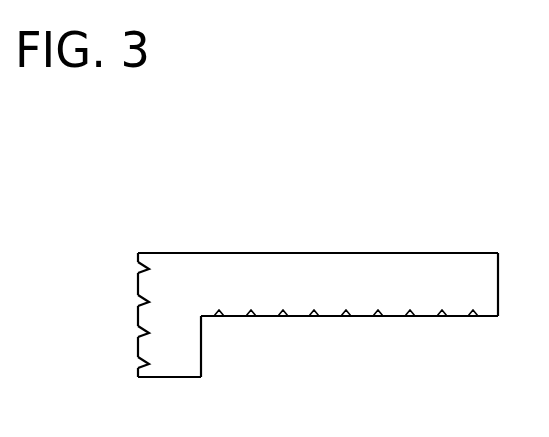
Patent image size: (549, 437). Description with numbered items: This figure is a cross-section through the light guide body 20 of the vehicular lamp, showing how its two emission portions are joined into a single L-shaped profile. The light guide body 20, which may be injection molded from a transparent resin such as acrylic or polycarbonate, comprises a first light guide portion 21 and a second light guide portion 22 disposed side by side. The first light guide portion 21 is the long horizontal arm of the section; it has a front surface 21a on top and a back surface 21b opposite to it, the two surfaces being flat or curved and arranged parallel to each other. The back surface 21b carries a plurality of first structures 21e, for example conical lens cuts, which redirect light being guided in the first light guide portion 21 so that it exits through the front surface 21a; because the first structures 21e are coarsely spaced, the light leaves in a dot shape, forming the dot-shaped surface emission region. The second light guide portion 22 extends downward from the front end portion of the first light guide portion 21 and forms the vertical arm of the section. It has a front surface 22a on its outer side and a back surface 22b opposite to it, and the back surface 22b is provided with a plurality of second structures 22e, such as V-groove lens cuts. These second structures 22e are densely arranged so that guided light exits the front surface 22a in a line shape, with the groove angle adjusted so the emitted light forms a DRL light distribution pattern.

The light guide body 20 is at (269, 188).
The first light guide portion 21 is at (437, 252).
The front surface 21a is at (307, 252).
The back surface 21b is at (378, 318).
The first structures 21e is at (345, 310).
The second light guide portion 22 is at (138, 300).
The front surface 22a is at (138, 353).
The back surface 22b is at (201, 352).
The second structures 22e is at (138, 268).